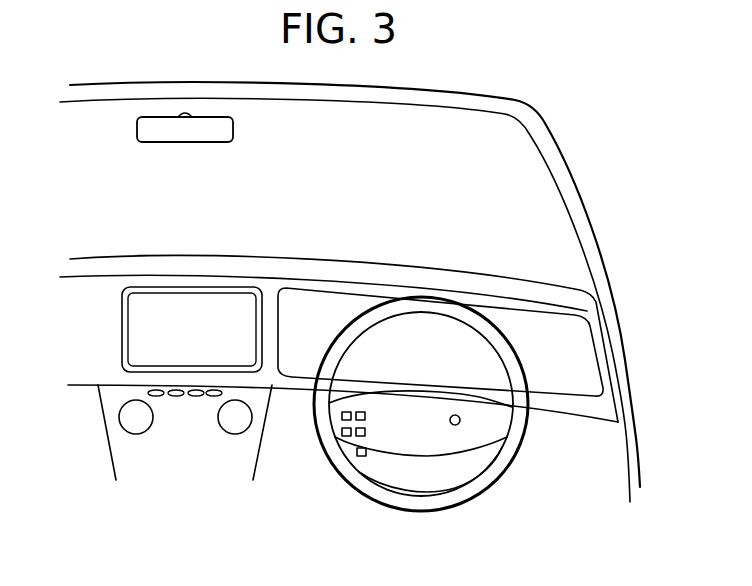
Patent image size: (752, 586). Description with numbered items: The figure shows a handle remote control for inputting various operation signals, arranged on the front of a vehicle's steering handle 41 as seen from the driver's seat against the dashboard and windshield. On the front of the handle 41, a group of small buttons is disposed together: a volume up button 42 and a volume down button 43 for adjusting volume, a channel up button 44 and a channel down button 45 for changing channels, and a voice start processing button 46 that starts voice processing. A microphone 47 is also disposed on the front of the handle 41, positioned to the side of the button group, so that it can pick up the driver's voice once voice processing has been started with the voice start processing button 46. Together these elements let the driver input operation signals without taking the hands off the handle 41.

The handle 41 is at (503, 349).
The volume up button 42 is at (341, 420).
The volume down button 43 is at (341, 433).
The channel up button 44 is at (366, 414).
The channel down button 45 is at (366, 432).
The voice start processing button 46 is at (362, 457).
The microphone 47 is at (458, 424).